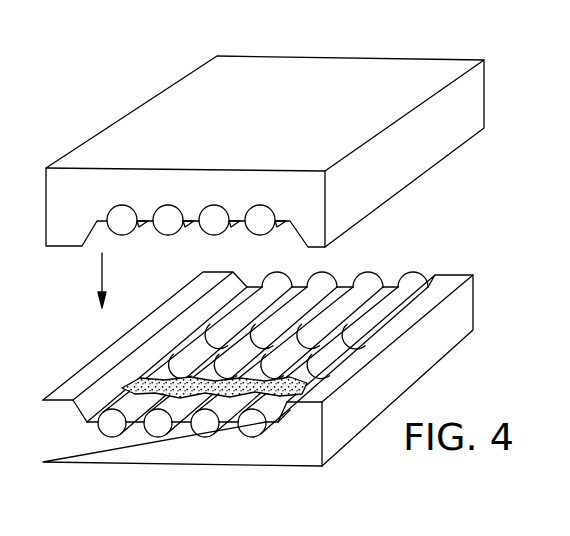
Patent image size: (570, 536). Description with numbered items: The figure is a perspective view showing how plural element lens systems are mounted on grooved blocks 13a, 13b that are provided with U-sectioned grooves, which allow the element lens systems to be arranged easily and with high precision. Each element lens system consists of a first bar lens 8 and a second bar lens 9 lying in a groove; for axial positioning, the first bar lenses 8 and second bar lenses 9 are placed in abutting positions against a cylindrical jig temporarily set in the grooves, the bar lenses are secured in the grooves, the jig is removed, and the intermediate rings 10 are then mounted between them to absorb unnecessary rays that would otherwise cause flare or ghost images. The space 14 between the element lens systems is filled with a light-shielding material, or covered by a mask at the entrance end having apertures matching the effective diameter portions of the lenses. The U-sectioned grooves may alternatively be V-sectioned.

The grooved block 13b is at (452, 147).
The grooved block 13a is at (452, 337).
The second bar lens 9 is at (407, 280).
The intermediate ring 10 is at (345, 345).
The first bar lens 8 is at (256, 430).
The space between element lens systems 14 is at (137, 380).